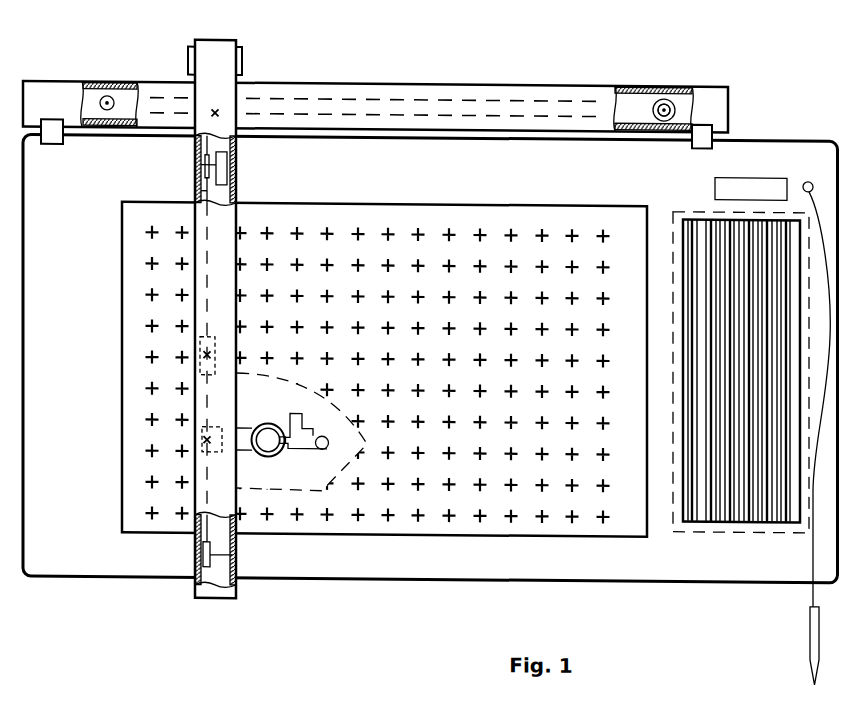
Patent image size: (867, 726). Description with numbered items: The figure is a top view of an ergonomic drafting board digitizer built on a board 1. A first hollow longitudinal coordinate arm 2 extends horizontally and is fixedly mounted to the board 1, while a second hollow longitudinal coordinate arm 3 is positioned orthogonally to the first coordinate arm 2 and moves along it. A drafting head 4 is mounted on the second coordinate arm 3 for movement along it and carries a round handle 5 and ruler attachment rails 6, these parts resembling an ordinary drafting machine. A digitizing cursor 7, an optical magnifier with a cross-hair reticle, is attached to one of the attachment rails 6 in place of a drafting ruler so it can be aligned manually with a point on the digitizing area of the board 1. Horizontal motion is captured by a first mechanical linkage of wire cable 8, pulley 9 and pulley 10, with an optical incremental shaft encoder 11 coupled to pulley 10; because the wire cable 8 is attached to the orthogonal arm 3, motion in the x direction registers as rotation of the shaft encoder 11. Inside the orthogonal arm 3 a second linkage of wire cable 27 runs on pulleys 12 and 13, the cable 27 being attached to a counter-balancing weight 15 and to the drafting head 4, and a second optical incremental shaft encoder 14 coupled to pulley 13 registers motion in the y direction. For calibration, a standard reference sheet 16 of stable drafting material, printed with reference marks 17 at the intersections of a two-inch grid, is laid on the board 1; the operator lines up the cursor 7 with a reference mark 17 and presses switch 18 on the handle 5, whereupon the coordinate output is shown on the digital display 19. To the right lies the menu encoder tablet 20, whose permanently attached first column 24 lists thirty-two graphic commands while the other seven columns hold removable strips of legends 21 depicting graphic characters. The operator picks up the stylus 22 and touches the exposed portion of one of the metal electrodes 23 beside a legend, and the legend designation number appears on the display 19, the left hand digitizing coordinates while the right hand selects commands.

The board 1 is at (112, 577).
The first hollow longitudinal coordinate arm 2 is at (317, 80).
The second hollow longitudinal coordinate arm 3 is at (215, 38).
The drafting head 4 is at (225, 431).
The round handle 5 is at (271, 437).
The ruler attachment rails 6 is at (295, 419).
The digitizing cursor 7 is at (322, 447).
The wire cable 8 is at (503, 94).
The pulley 9 is at (107, 94).
The pulley 10 is at (664, 110).
The optical incremental shaft encoder 11 is at (664, 93).
The pulley 12 is at (200, 549).
The pulley 13 is at (203, 158).
The optical incremental shaft encoder 14 is at (228, 164).
The counter-balancing weight 15 is at (215, 369).
The standard reference sheet 16 is at (362, 197).
The reference marks 17 is at (475, 222).
The switch 18 is at (287, 443).
The digital display 19 is at (737, 182).
The menu encoder tablet 20 is at (703, 200).
The removable strip of legends 21 is at (792, 522).
The stylus 22 is at (812, 635).
The metal electrodes 23 is at (737, 516).
The first column 24 is at (683, 517).
The wire cable 27 is at (202, 189).